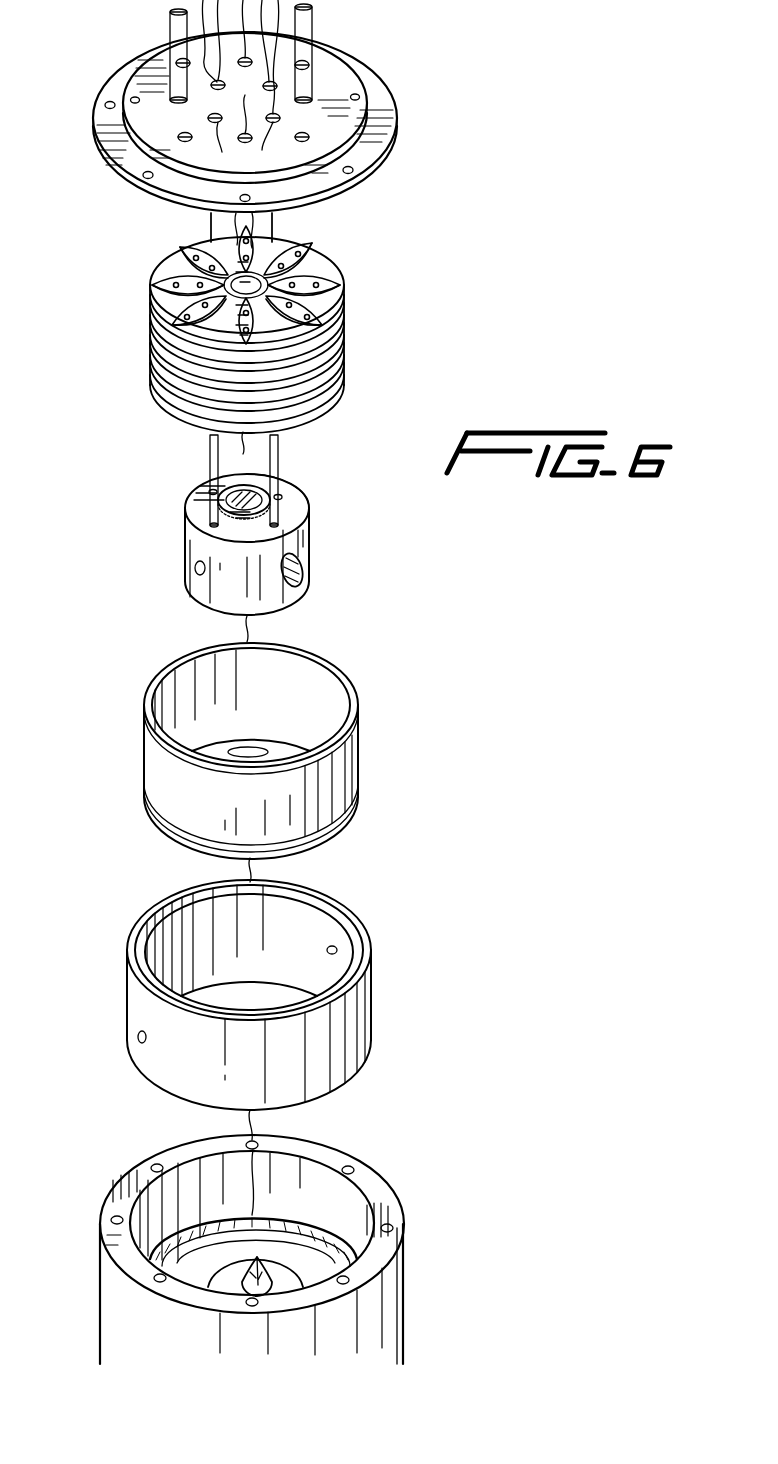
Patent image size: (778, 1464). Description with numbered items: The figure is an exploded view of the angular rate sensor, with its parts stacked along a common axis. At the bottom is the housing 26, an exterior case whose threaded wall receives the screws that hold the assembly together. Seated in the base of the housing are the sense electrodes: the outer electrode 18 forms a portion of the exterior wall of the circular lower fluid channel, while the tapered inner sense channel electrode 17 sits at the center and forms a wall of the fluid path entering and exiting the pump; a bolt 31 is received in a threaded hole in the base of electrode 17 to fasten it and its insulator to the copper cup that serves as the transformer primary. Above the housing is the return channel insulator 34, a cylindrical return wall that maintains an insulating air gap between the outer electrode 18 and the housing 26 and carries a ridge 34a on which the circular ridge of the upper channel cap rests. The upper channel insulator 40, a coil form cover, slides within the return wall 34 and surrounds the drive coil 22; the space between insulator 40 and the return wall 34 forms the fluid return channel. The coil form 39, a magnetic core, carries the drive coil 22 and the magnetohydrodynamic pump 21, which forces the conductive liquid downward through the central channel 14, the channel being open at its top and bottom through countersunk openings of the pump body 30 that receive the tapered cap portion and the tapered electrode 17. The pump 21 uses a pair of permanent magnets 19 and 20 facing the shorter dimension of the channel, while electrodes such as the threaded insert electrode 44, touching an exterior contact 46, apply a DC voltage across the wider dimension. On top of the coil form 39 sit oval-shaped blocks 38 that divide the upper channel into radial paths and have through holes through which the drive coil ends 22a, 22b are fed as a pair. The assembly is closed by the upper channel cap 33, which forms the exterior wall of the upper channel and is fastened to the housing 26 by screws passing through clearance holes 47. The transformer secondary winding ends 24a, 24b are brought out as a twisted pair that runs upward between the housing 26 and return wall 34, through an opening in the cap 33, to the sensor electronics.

The central channel 14 is at (249, 492).
The inner sense channel electrode 17 is at (288, 1266).
The outer electrode 18 is at (322, 1228).
The permanent magnet 19 is at (308, 563).
The permanent magnet 20 is at (334, 349).
The magnetohydrodynamic pump 21 is at (310, 530).
The drive coil 22 is at (334, 384).
The drive coil end 22a is at (368, 233).
The drive coil end 22b is at (241, 227).
The secondary winding end 24a is at (302, 20).
The secondary winding end 24b is at (250, 1122).
The housing 26 is at (404, 1330).
The header 30 is at (277, 508).
The bolt 31 is at (196, 605).
The upper channel cap 33 is at (393, 160).
The return channel insulator 34 is at (374, 1027).
The ridge 34a is at (336, 948).
The oval-shaped block 38 is at (332, 271).
The coil form 39 is at (334, 313).
The upper channel insulator 40 is at (360, 767).
The electrode 44 is at (194, 567).
The exterior contact 46 is at (175, 26).
The clearance hole 47 is at (105, 103).